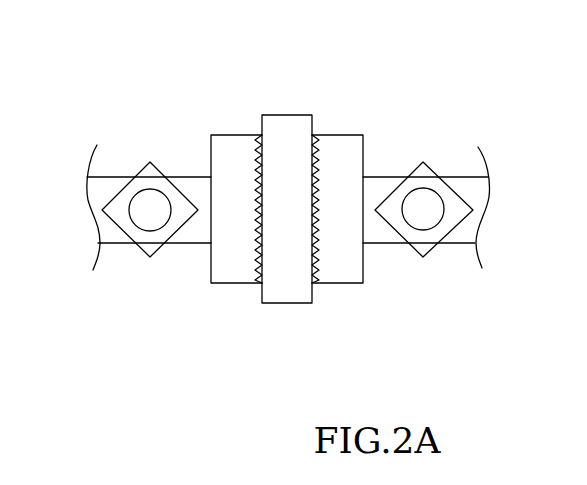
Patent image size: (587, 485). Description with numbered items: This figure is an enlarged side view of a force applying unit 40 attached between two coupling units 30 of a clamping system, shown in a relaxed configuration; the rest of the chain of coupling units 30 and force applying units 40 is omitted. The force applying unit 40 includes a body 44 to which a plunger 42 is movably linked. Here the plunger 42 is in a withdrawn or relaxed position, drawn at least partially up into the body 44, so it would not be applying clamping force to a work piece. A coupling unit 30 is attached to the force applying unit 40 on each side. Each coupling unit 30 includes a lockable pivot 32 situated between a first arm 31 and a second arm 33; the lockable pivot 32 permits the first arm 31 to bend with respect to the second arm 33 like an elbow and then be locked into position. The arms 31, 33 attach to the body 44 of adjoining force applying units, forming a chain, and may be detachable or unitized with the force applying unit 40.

The coupling unit 30 is at (281, 209).
The first arm 31 is at (115, 177).
The lockable pivot 32 is at (150, 208).
The second arm 33 is at (190, 177).
The force applying unit 40 is at (287, 199).
The plunger 42 is at (287, 117).
The body 44 is at (238, 135).